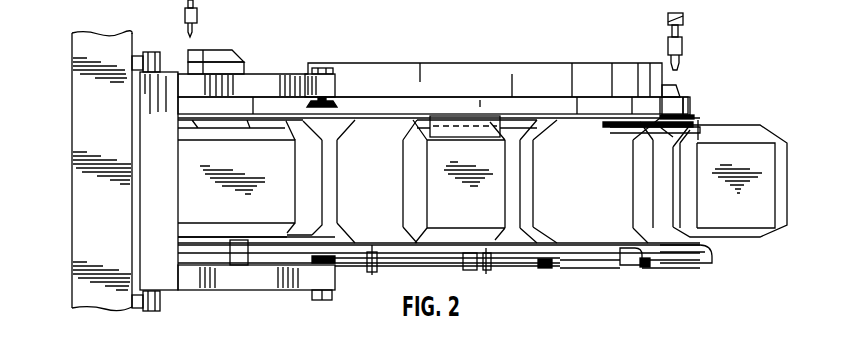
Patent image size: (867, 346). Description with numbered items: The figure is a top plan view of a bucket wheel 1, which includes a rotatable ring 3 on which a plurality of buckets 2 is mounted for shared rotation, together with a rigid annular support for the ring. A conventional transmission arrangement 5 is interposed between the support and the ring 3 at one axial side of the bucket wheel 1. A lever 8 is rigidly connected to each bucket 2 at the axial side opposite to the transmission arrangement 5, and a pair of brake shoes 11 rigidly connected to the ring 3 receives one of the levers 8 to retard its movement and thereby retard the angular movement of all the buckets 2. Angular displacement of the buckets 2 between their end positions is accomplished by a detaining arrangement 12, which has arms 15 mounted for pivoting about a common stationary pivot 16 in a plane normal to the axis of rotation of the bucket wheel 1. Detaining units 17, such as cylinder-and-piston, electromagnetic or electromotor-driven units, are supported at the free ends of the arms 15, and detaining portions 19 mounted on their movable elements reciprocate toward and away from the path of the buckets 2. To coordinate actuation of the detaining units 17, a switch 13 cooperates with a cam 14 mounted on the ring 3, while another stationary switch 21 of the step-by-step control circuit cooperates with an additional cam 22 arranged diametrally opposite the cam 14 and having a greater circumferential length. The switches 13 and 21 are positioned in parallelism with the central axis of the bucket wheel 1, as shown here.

The bucket wheel 1 is at (712, 264).
The bucket 2 is at (498, 115).
The rotatable ring 3 is at (335, 243).
The transmission arrangement 5 is at (492, 83).
The lever 8 is at (670, 270).
The brake shoes 11 is at (465, 270).
The detaining arrangement 12 is at (252, 80).
The switch 13 is at (683, 43).
The cam 14 is at (677, 88).
The arms 15 is at (282, 85).
The stationary pivot 16 is at (160, 307).
The detaining units 17 is at (321, 68).
The detaining portions 19 is at (331, 99).
The switch 21 is at (197, 15).
The cam 22 is at (208, 56).